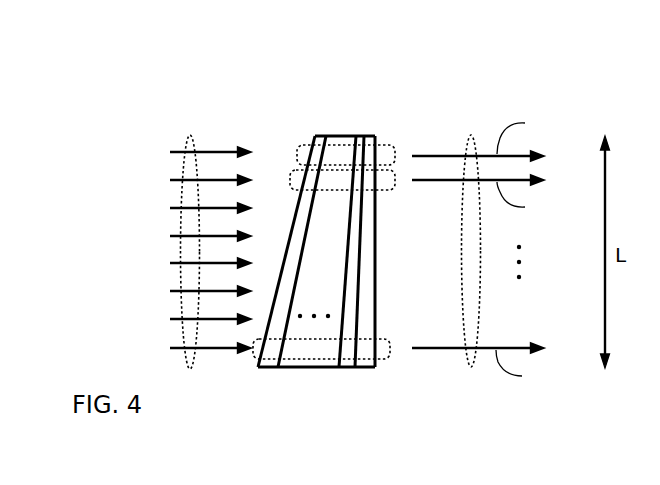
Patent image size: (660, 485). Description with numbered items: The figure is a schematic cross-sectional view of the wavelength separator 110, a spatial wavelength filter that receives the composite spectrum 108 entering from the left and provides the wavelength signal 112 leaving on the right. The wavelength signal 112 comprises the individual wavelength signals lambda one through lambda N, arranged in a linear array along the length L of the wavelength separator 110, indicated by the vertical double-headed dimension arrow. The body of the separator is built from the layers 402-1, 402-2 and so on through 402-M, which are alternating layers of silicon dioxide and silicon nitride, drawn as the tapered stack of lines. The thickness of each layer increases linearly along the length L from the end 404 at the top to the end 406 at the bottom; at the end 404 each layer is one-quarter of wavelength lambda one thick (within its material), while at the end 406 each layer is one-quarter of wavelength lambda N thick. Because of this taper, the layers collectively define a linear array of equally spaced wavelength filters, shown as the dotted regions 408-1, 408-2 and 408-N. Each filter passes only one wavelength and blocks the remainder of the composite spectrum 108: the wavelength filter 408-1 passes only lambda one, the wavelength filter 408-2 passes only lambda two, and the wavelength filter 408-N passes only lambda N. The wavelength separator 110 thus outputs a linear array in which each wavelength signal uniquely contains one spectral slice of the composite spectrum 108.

The wavelength separator 110 is at (204, 49).
The composite spectrum 108 is at (180, 252).
The wavelength signal 112 is at (471, 135).
The end 404 is at (324, 228).
The end 406 is at (465, 411).
The wavelength filter 408-1 is at (308, 145).
The wavelength filter 408-2 is at (362, 190).
The wavelength filter 408-N is at (360, 340).
The layer 402-M is at (270, 368).
The layer 402-2 is at (345, 368).
The layer 402-1 is at (364, 368).